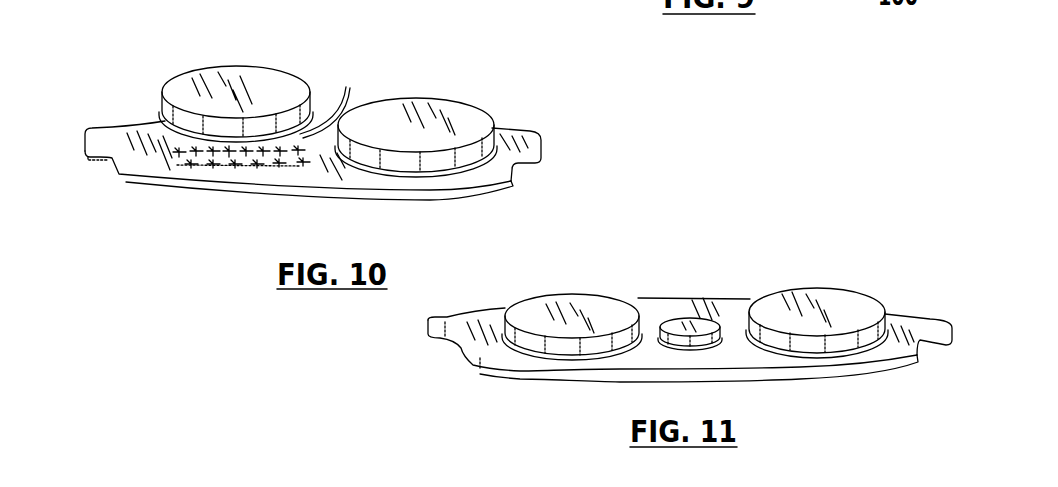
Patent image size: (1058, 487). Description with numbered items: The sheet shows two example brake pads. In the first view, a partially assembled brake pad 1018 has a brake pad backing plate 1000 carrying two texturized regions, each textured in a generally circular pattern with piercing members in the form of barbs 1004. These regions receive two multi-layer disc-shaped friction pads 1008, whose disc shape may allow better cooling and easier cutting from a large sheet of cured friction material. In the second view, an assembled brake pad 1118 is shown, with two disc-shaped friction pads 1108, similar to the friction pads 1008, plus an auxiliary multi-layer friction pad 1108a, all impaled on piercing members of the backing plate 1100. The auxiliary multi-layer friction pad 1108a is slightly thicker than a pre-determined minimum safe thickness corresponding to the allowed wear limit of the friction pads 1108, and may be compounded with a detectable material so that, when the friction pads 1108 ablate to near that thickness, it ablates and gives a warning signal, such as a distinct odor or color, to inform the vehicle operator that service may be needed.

In FIG. 10, the brake pad backing plate 1000 is at (292, 128).
In FIG. 10, the barbs 1004 is at (285, 113).
In FIG. 10, the multi-layer disc-shaped friction pads 1008 is at (269, 58).
In FIG. 10, the brake pad 1018 is at (89, 107).
In FIG. 11, the backing plate 1100 is at (656, 298).
In FIG. 11, the disc-shaped friction pads 1108 is at (599, 288).
In FIG. 11, the auxiliary multi-layer friction pad 1108a is at (704, 294).
In FIG. 11, the brake pad 1118 is at (888, 267).